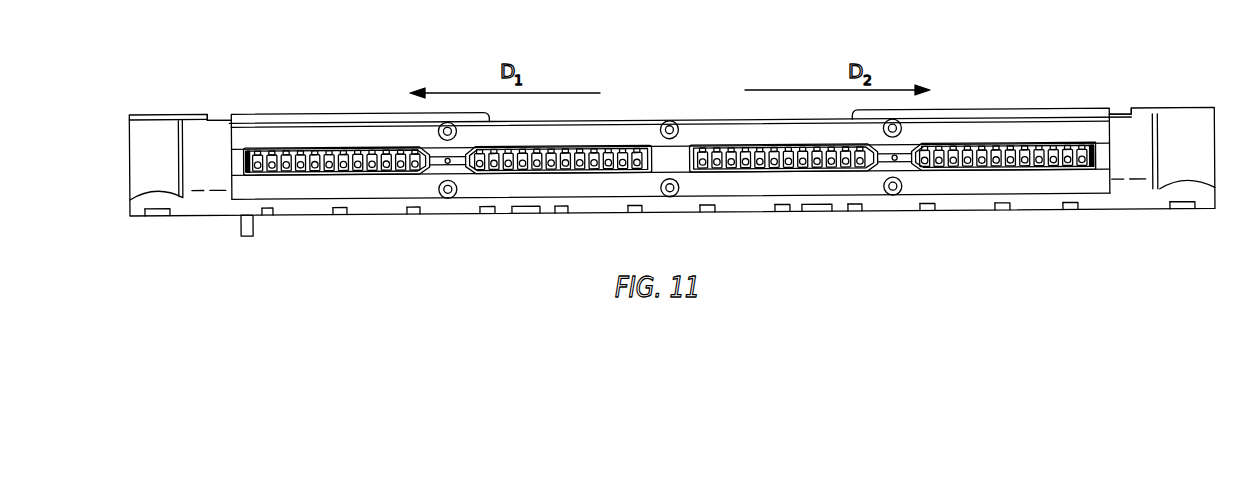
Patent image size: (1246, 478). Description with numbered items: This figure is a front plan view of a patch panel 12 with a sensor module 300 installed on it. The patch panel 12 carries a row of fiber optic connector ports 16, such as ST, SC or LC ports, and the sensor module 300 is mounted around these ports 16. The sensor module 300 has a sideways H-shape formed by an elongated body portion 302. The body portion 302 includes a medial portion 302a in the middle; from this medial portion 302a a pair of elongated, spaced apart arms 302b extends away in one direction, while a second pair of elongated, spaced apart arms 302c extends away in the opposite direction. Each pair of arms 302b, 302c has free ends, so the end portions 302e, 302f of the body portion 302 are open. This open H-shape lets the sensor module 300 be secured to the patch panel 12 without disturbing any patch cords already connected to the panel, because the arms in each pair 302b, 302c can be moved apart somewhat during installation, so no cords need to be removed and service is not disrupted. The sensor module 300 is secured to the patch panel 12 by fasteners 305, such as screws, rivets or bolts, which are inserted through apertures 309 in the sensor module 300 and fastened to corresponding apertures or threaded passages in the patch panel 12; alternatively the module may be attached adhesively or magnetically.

The patch panel 12 is at (1145, 108).
The fiber optic connector ports 16 is at (360, 170).
The sensor module 300 is at (243, 188).
The body portion 302 is at (728, 125).
The medial portion 302a is at (668, 160).
The arms 302b is at (284, 130).
The arms 302c is at (972, 130).
The end portion 302e is at (231, 166).
The end portion 302f is at (1110, 163).
The fasteners 305 is at (445, 127).
The apertures 309 is at (440, 127).